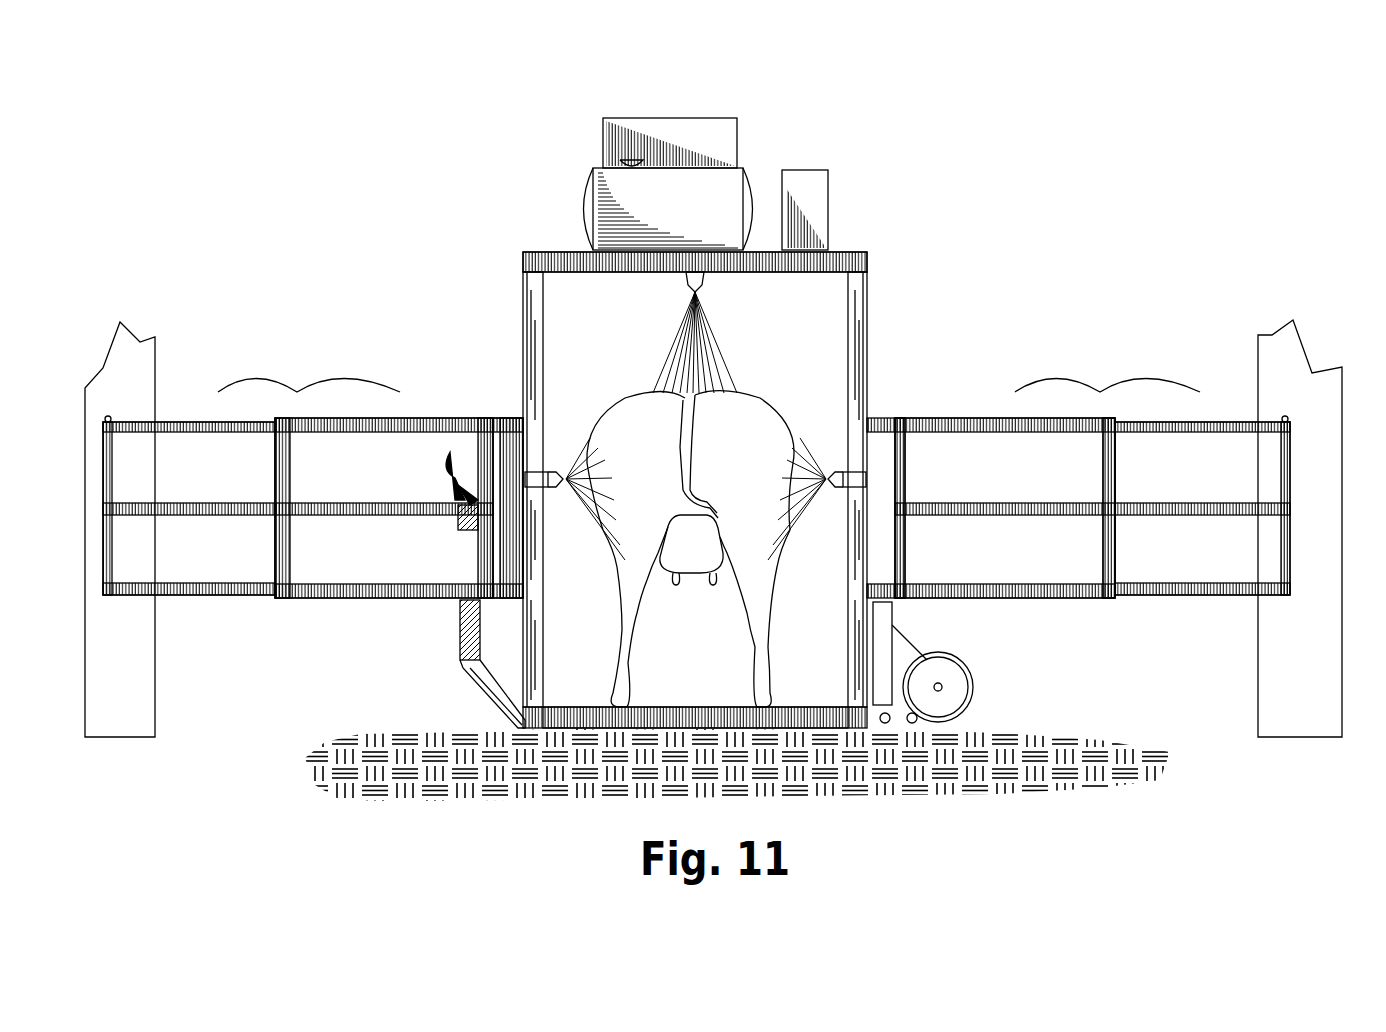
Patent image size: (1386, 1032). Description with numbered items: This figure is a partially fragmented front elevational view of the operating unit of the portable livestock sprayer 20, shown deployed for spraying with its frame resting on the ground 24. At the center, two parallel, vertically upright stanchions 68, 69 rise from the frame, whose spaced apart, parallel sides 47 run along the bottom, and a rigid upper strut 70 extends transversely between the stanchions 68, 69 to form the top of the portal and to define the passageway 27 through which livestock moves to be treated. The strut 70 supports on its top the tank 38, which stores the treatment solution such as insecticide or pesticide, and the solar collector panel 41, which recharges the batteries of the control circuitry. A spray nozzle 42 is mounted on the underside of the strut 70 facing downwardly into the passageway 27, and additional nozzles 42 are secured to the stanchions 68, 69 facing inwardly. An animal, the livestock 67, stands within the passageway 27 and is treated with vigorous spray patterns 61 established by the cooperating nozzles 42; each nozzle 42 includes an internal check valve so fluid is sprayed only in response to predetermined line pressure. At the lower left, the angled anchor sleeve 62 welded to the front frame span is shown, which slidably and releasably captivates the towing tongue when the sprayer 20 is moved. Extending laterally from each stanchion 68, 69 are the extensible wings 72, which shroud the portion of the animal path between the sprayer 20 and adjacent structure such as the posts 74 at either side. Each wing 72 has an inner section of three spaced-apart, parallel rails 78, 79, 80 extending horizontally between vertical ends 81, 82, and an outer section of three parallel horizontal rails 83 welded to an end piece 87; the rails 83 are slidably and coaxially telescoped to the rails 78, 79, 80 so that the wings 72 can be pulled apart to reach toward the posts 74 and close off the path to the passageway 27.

The portable sprayer 20 is at (993, 110).
The ground 24 is at (1082, 745).
The passageway 27 is at (880, 284).
The tank 38 is at (590, 210).
The solar collector panel 41 is at (722, 130).
The spray nozzles 42 is at (704, 283).
The frame sides 47 is at (677, 717).
The spray patterns 61 is at (733, 343).
The anchor sleeve 62 is at (480, 693).
The livestock 67 is at (632, 422).
The stanchion 68 is at (860, 340).
The stanchion 69 is at (527, 318).
The upper strut 70 is at (567, 265).
The wings 72 is at (709, 377).
The posts 74 is at (160, 355).
The rail 78 is at (957, 428).
The rail 79 is at (1020, 515).
The rail 80 is at (948, 583).
The vertical end 81 is at (1113, 555).
The vertical end 82 is at (902, 480).
The rails 83 is at (178, 503).
The end piece 87 is at (292, 540).